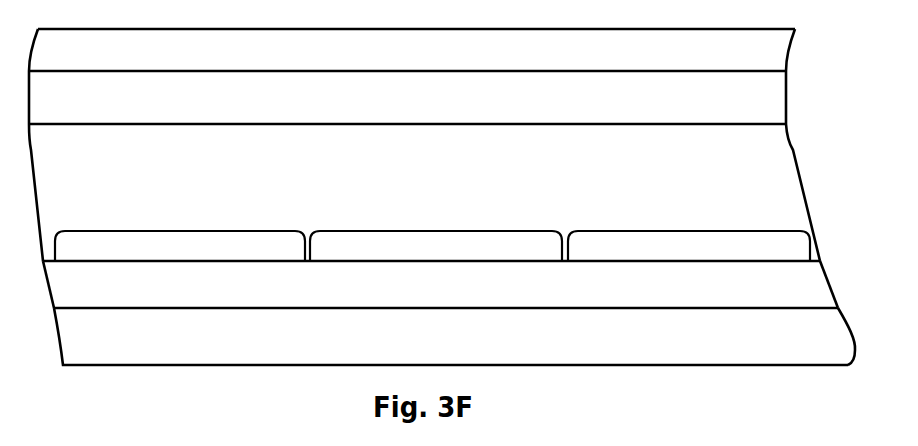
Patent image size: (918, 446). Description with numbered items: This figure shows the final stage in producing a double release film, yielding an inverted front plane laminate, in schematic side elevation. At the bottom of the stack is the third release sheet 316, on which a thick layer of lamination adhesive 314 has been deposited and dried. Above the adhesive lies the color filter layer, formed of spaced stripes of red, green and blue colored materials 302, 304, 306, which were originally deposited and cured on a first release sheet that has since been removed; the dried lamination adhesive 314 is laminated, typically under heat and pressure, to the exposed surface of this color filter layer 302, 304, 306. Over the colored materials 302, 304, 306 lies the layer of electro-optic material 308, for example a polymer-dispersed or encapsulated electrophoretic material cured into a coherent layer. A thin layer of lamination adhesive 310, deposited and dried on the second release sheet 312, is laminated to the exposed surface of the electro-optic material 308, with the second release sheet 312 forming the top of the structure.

The colored material 302 is at (159, 257).
The colored material 304 is at (399, 257).
The colored material 306 is at (666, 257).
The electro-optic material 308 is at (394, 192).
The lamination adhesive 310 is at (394, 108).
The second release sheet 312 is at (394, 59).
The lamination adhesive 314 is at (394, 304).
The third release sheet 316 is at (399, 349).